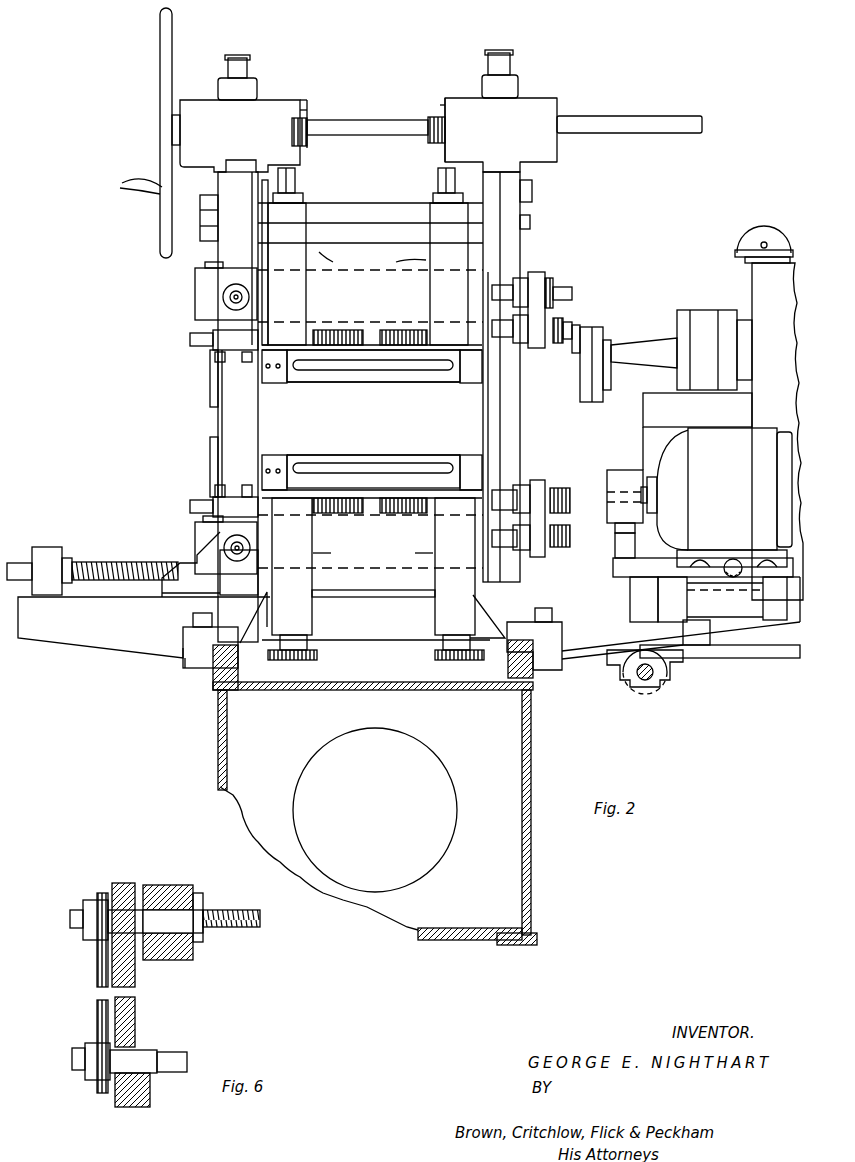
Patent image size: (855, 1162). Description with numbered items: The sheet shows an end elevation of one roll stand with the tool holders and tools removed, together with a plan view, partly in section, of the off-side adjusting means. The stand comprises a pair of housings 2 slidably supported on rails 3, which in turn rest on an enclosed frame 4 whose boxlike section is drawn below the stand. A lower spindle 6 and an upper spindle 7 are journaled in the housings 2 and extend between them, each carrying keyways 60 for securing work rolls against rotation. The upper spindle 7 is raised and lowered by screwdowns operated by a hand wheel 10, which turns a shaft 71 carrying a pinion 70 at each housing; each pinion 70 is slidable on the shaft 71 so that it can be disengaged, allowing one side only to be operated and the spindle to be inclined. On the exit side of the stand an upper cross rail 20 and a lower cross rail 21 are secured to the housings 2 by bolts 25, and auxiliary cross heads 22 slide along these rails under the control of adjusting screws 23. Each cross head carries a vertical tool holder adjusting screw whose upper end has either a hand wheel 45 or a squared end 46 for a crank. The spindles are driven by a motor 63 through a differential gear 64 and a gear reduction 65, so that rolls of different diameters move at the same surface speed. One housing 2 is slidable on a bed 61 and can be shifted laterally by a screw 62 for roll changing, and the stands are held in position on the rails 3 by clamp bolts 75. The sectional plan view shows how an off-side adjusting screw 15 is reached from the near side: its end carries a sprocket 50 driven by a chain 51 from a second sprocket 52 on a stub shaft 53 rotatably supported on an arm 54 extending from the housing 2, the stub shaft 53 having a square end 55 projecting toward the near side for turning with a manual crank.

In FIG. 2, the hand wheel 10 is at (173, 21).
In FIG. 2, the housings 2 is at (522, 258).
In FIG. 6, the housings 2 is at (177, 957).
In FIG. 2, the shaft 71 is at (392, 117).
In FIG. 2, the pinion 70 is at (305, 142).
In FIG. 2, the squared end 46 is at (295, 180).
In FIG. 2, the lower cross rail 21 is at (381, 562).
In FIG. 2, the auxiliary cross heads 22 is at (309, 299).
In FIG. 2, the adjusting screws 23 is at (344, 328).
In FIG. 2, the keyways 60 is at (374, 368).
In FIG. 2, the upper spindle 7 is at (313, 383).
In FIG. 2, the lower spindle 6 is at (308, 460).
In FIG. 2, the upper cross rail 20 is at (202, 284).
In FIG. 2, the bolts 25 is at (220, 276).
In FIG. 2, the gear reduction 65 is at (752, 299).
In FIG. 2, the differential gear 64 is at (643, 416).
In FIG. 2, the motor 63 is at (681, 561).
In FIG. 2, the clamp bolts 75 is at (214, 620).
In FIG. 2, the bed 61 is at (120, 644).
In FIG. 2, the screw 62 is at (130, 558).
In FIG. 2, the hand wheel 45 is at (320, 654).
In FIG. 2, the rails 3 is at (239, 665).
In FIG. 2, the enclosed frame 4 is at (534, 761).
In FIG. 6, the sprocket 50 is at (84, 902).
In FIG. 6, the chain 51 is at (90, 1004).
In FIG. 6, the arm 54 is at (135, 1014).
In FIG. 6, the adjusting screws 15 is at (210, 930).
In FIG. 6, the stub shaft 53 is at (71, 1056).
In FIG. 6, the square end 55 is at (174, 1074).
In FIG. 6, the second sprocket 52 is at (84, 1088).